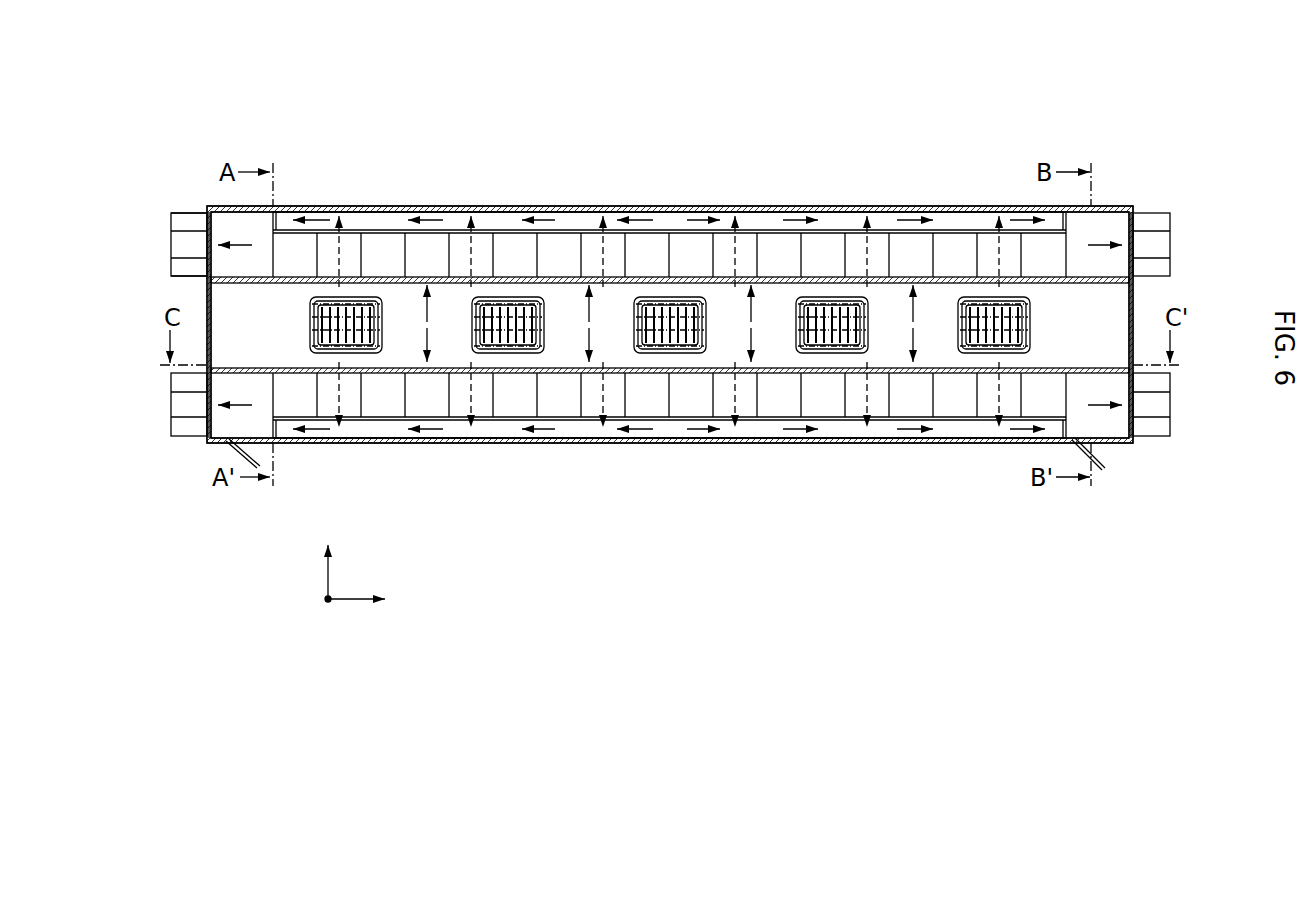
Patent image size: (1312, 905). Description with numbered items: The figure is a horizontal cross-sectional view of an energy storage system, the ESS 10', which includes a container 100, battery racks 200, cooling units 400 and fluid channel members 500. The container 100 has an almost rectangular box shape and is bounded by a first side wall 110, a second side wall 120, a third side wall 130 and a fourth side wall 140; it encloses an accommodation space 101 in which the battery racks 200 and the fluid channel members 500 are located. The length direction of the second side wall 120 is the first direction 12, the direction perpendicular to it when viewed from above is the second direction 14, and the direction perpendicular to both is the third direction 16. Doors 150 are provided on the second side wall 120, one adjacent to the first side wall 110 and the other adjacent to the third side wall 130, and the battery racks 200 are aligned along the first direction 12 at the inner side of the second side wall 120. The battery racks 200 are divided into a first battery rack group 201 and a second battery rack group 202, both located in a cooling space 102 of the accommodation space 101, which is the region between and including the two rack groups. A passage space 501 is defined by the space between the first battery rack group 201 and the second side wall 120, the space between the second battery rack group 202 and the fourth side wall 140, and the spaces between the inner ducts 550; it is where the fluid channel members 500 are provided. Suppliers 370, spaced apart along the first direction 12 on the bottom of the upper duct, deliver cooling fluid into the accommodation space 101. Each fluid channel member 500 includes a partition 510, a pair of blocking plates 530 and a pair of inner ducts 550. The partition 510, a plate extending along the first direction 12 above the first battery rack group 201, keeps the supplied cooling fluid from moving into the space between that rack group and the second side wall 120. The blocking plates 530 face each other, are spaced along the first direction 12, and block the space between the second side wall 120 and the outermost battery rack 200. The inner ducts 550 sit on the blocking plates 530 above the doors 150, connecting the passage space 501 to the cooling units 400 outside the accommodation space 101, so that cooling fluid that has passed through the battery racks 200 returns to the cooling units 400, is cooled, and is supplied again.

The ESS 10' is at (314, 55).
The container 100 is at (1156, 202).
The accommodation space 101 is at (668, 290).
The cooling space 102 is at (446, 288).
The first side wall 110 is at (1134, 290).
The second side wall 120 is at (762, 443).
The third side wall 130 is at (208, 288).
The fourth side wall 140 is at (552, 209).
The door 150 is at (228, 452).
The battery rack 200 is at (775, 245).
The first battery rack group 201 is at (830, 421).
The second battery rack group 202 is at (829, 226).
The supplier 370 is at (1035, 324).
The cooling unit 400 is at (170, 245).
The fluid channel member 500 is at (172, 200).
The passage space 501 is at (480, 222).
The partition 510 is at (350, 274).
The blocking plate 530 is at (278, 222).
The inner duct 550 is at (241, 268).
The first direction 12 is at (373, 599).
The second direction 14 is at (328, 554).
The third direction 16 is at (326, 604).